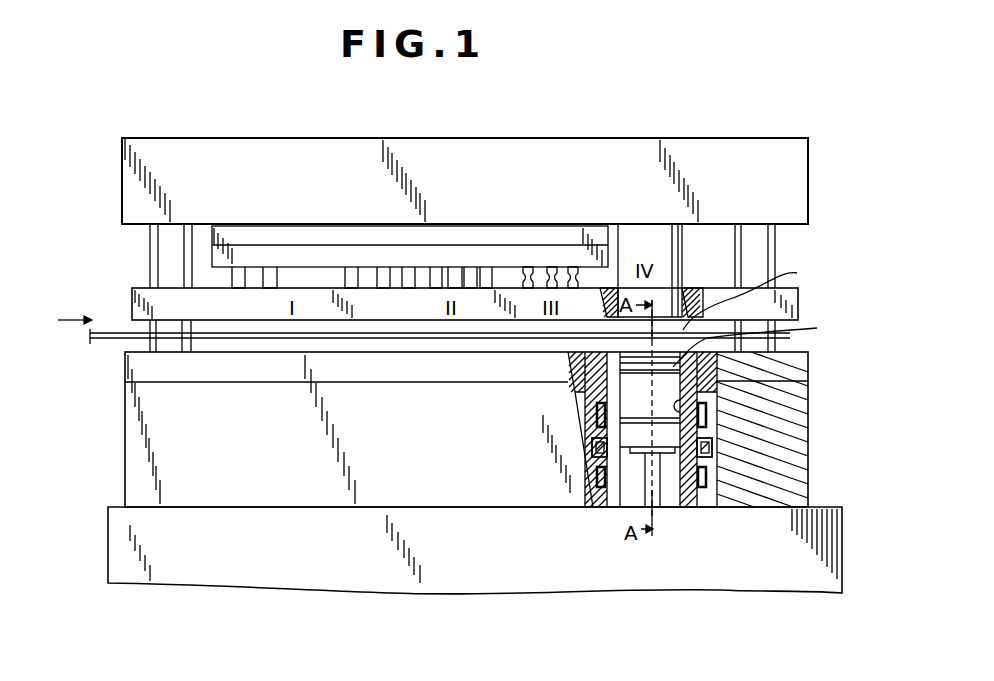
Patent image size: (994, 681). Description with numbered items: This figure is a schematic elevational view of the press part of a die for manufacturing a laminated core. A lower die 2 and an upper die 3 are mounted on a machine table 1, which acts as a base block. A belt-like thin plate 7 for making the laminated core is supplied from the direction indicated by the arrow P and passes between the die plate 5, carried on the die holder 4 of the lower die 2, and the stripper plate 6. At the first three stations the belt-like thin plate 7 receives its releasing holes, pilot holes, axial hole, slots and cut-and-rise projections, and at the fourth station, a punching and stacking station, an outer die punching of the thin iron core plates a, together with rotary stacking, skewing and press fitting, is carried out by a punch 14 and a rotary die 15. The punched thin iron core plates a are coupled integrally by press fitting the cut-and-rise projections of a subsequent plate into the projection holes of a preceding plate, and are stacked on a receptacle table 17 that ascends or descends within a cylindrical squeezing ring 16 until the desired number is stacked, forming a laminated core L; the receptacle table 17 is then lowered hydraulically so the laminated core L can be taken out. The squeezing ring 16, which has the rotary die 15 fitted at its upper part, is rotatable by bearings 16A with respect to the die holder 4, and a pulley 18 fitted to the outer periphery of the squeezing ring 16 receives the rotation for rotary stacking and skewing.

The machine table 1 is at (573, 568).
The lower die 2 is at (166, 402).
The upper die 3 is at (160, 168).
The die holder 4 is at (133, 462).
The die plate 5 is at (127, 370).
The stripper plate 6 is at (133, 302).
The belt-like thin plate 7 is at (112, 340).
The punch 14 is at (668, 253).
The rotary die 15 is at (808, 356).
The squeezing ring 16 is at (717, 398).
The bearings 16A is at (597, 410).
The receptacle table 17 is at (610, 477).
The pulley 18 is at (713, 447).
The arrow indicating supply direction P is at (62, 321).
The laminated core L is at (747, 291).
The thin iron core plate a is at (752, 343).